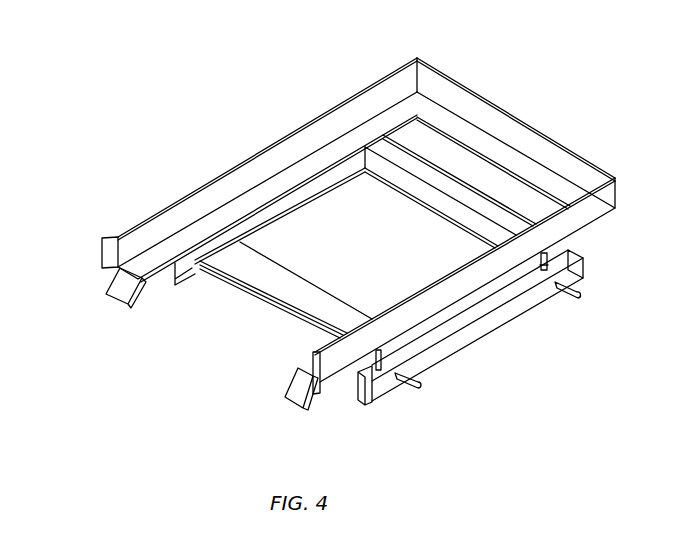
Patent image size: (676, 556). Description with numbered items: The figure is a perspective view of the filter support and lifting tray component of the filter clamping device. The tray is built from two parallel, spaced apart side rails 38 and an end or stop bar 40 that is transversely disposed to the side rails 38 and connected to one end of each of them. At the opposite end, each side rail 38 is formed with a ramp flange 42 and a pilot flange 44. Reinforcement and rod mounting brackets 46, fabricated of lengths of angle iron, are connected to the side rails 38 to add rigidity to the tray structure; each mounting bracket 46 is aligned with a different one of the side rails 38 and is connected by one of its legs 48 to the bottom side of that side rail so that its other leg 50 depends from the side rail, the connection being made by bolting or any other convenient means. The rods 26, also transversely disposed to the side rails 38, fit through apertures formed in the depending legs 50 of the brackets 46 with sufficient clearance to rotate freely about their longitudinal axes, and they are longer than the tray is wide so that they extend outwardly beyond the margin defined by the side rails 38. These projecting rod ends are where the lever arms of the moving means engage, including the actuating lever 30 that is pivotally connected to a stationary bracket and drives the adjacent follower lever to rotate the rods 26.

The rods 26 is at (406, 386).
The actuating lever 30 is at (675, 455).
The side rails 38 is at (262, 172).
The stop bar 40 is at (520, 136).
The ramp flange 42 is at (126, 290).
The pilot flange 44 is at (108, 250).
The rod mounting brackets 46 is at (280, 212).
The leg 48 is at (364, 392).
The depending leg 50 is at (452, 345).